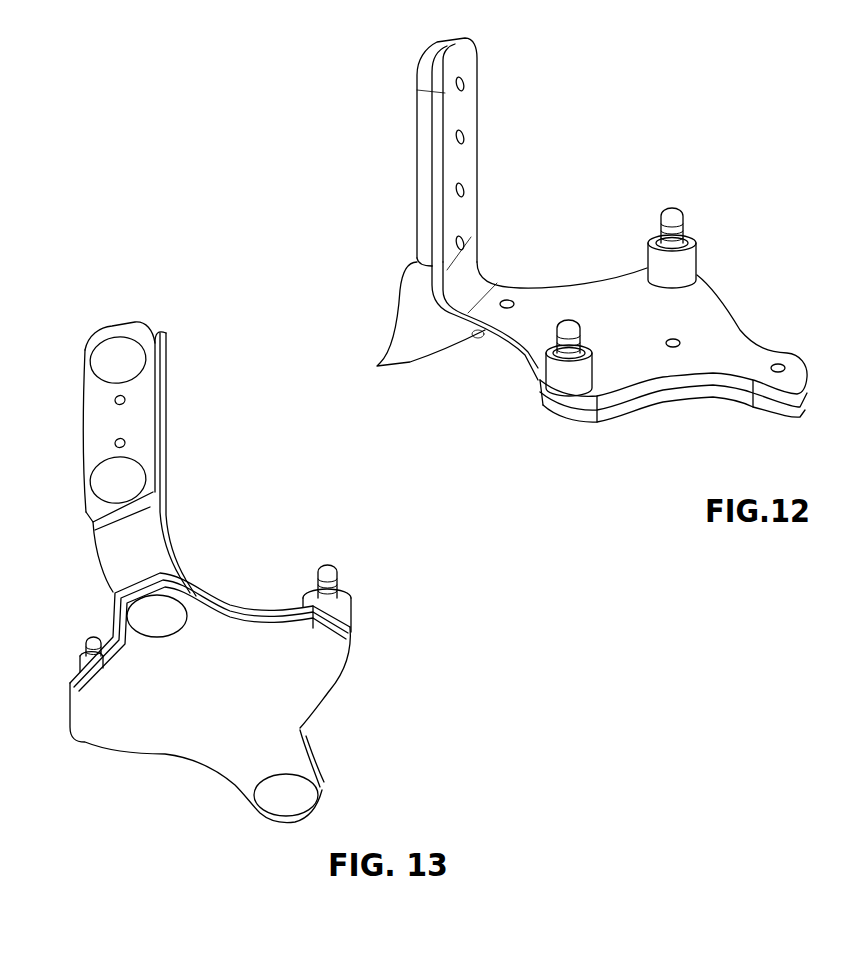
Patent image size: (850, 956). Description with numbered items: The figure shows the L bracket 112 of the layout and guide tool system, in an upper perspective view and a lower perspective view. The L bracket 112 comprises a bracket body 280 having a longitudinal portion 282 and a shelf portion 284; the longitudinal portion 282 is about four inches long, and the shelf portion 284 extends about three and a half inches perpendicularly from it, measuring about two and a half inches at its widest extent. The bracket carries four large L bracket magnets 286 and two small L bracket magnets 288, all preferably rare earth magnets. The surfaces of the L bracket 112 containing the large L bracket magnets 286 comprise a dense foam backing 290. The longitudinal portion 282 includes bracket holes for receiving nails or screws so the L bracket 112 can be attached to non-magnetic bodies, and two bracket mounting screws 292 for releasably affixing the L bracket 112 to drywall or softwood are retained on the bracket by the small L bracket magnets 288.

In FIG. 12, the L bracket 112 is at (604, 159).
In FIG. 13, the L bracket 112 is at (392, 614).
In FIG. 12, the bracket body 280 is at (506, 260).
In FIG. 12, the longitudinal portion 282 is at (490, 134).
In FIG. 13, the longitudinal portion 282 is at (187, 496).
In FIG. 12, the shelf portion 284 is at (692, 316).
In FIG. 13, the shelf portion 284 is at (278, 570).
In FIG. 12, the large L bracket magnets 286 is at (642, 336).
In FIG. 13, the large L bracket magnets 286 is at (130, 360).
In FIG. 12, the small L bracket magnets 288 is at (698, 281).
In FIG. 12, the dense foam backing 290 is at (380, 365).
In FIG. 13, the dense foam backing 290 is at (142, 423).
In FIG. 12, the bracket mounting screws 292 is at (690, 250).